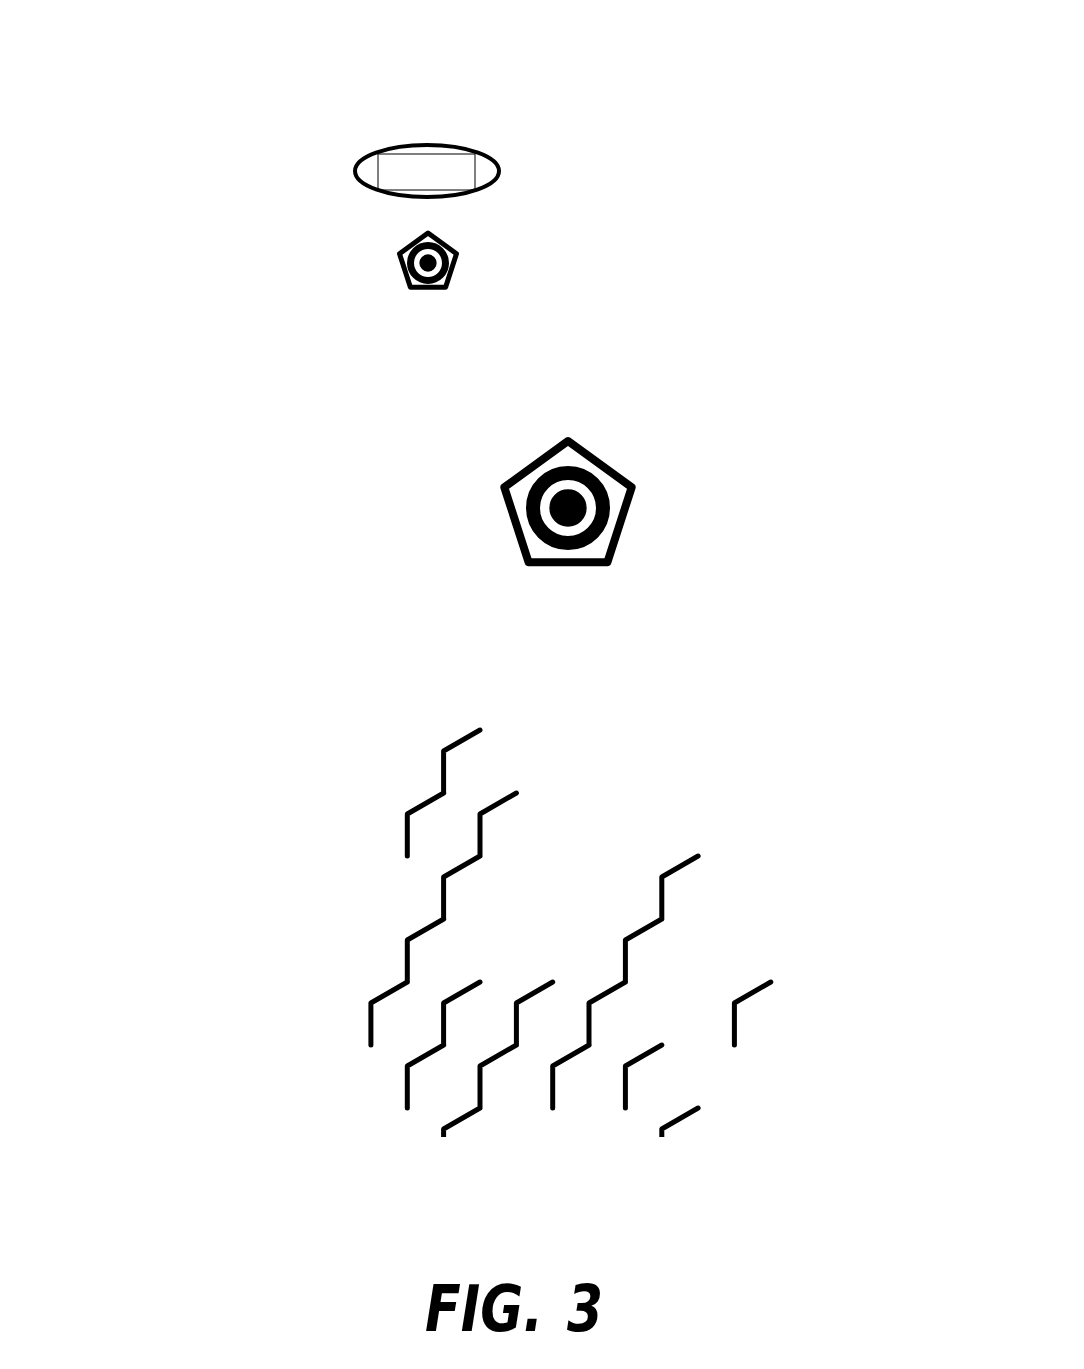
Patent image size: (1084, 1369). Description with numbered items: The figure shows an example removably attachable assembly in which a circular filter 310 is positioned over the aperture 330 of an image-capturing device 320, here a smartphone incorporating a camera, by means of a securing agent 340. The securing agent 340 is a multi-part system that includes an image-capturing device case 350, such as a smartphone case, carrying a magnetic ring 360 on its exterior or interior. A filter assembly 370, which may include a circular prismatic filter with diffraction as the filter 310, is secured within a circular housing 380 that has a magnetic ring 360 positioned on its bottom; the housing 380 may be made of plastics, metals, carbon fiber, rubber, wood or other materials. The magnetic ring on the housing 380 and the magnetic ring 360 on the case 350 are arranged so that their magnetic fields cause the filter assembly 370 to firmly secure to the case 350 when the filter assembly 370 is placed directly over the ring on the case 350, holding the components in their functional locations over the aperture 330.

The circular filter 310 is at (393, 171).
The image-capturing device 320 is at (312, 650).
The aperture 330 is at (357, 315).
The securing agent 340 is at (536, 191).
The image-capturing device case 350 is at (690, 620).
The magnetic ring 360 is at (372, 328).
The filter assembly 370 is at (343, 133).
The circular housing 380 is at (365, 242).